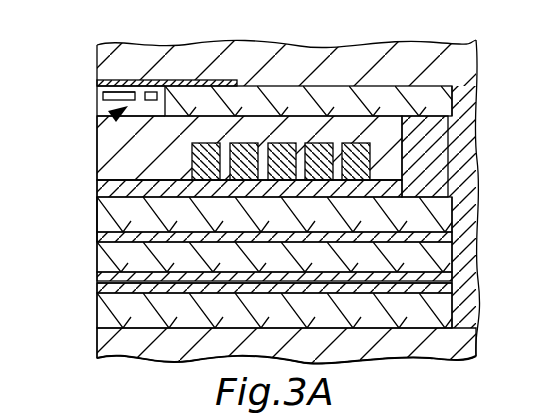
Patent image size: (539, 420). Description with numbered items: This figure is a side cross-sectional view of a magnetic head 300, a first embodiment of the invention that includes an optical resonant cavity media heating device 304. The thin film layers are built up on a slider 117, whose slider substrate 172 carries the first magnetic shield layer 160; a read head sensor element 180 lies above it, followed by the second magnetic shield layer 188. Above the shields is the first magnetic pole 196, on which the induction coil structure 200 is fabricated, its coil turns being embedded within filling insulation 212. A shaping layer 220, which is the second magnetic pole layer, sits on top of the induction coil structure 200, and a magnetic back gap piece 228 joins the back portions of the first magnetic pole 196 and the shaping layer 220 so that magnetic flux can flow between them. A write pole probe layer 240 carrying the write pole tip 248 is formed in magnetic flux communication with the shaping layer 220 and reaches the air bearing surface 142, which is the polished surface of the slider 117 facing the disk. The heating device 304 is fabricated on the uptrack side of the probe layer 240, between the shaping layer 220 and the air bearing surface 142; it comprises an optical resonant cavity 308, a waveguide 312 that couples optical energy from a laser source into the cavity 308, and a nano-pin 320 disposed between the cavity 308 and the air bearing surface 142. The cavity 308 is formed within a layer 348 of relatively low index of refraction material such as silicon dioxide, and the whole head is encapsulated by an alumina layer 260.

The magnetic head 300 is at (68, 42).
The optical resonant cavity 308 is at (123, 91).
The waveguide 312 is at (150, 92).
The write pole probe layer 240 is at (205, 81).
The alumina layer 260 is at (375, 50).
The write pole tip 248 is at (97, 82).
The nano-pin 320 is at (103, 97).
The low index of refraction material layer 348 is at (110, 113).
The optical resonant cavity media heating device 304 is at (111, 110).
The filling insulation 212 is at (152, 166).
The shaping layer 220 is at (443, 100).
The induction coil structure 200 is at (397, 152).
The magnetic back gap piece 228 is at (433, 175).
The first magnetic pole 196 is at (440, 217).
The air bearing surface 142 is at (97, 215).
The second magnetic shield layer 188 is at (427, 262).
The read head sensor element 180 is at (118, 280).
The first magnetic shield layer 160 is at (437, 308).
The slider substrate 172 is at (438, 342).
The slider 117 is at (380, 343).